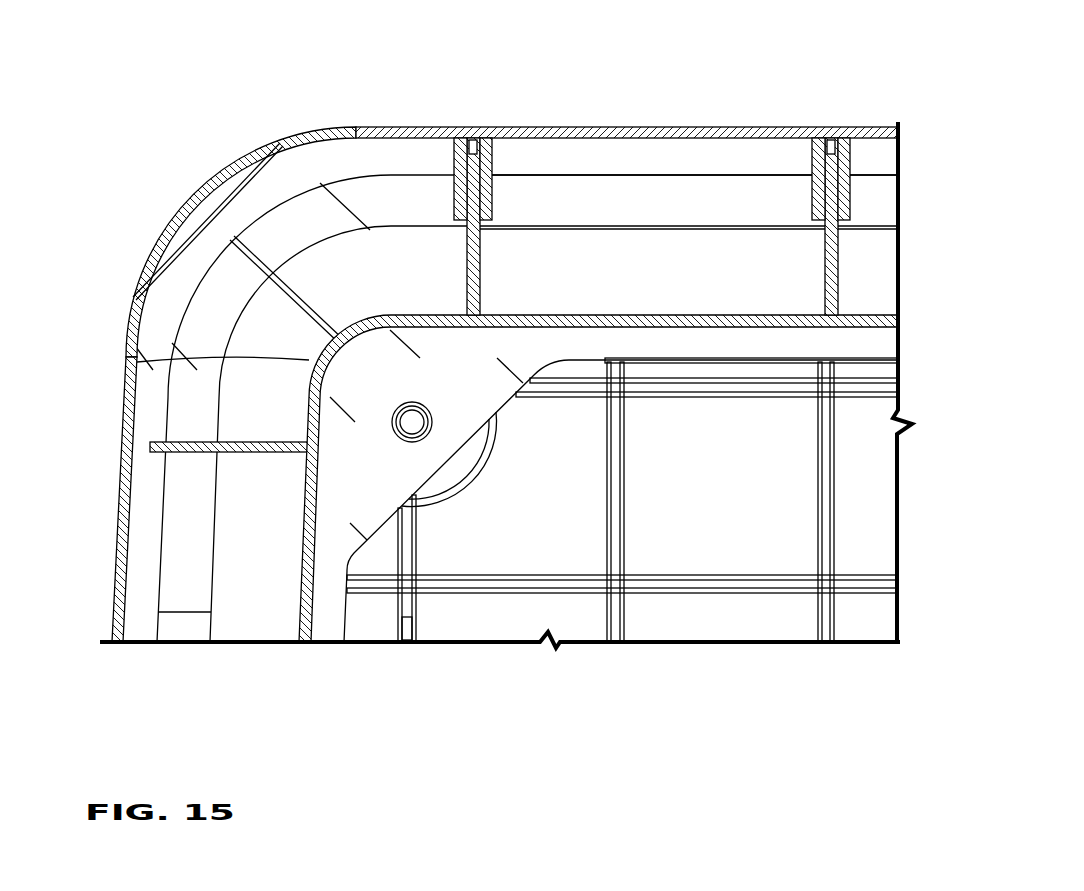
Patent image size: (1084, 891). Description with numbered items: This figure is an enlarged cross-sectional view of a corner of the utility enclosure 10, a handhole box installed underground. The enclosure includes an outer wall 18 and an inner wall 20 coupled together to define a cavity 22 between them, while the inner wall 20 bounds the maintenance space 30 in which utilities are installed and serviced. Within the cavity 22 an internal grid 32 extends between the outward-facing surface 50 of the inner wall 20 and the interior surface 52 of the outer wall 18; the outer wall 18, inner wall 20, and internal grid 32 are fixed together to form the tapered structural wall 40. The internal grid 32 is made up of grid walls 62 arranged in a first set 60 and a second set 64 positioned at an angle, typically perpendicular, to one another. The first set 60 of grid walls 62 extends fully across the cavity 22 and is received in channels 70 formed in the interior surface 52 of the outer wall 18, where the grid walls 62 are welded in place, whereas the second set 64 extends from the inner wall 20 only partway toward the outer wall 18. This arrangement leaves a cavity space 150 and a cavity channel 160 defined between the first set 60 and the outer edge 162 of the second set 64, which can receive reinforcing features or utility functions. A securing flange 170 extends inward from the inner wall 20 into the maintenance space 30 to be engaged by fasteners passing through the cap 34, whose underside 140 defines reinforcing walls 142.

The utility enclosure 10 is at (248, 92).
The outer wall 18 is at (147, 252).
The inner wall 20 is at (313, 617).
The cavity 22 is at (165, 306).
The maintenance space 30 is at (461, 614).
The internal grid 32 is at (250, 577).
The cap 34 is at (689, 614).
The structural wall 40 is at (105, 564).
The outward-facing surface 50 is at (310, 376).
The interior surface 52 is at (174, 230).
The first set of grid walls 60 is at (848, 247).
The grid walls 62 is at (458, 268).
The second set of grid walls 64 is at (871, 292).
The channels 70 is at (444, 156).
The underside 140 is at (853, 536).
The reinforcing walls 142 is at (833, 613).
The cavity space 150 is at (538, 263).
The cavity channel 160 is at (871, 164).
The outer edge 162 is at (693, 226).
The securing flange 170 is at (373, 433).